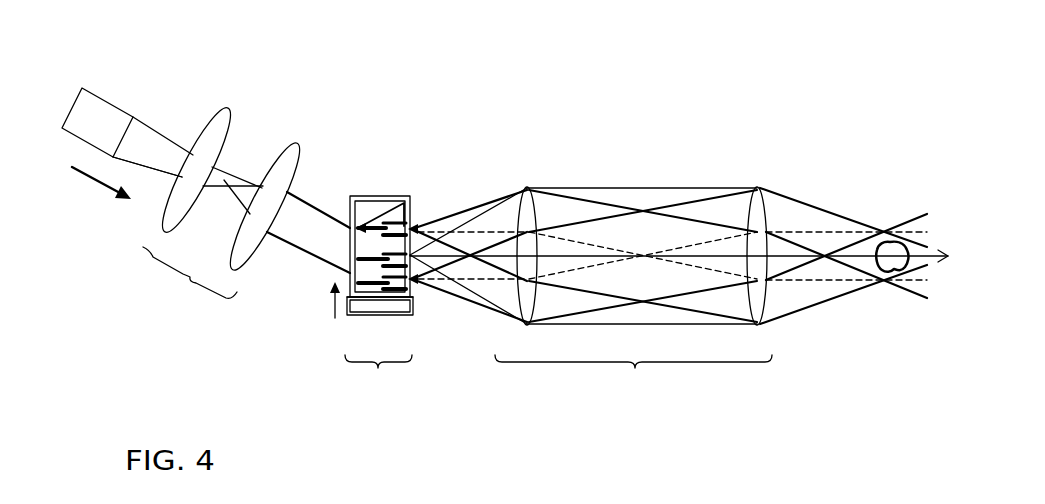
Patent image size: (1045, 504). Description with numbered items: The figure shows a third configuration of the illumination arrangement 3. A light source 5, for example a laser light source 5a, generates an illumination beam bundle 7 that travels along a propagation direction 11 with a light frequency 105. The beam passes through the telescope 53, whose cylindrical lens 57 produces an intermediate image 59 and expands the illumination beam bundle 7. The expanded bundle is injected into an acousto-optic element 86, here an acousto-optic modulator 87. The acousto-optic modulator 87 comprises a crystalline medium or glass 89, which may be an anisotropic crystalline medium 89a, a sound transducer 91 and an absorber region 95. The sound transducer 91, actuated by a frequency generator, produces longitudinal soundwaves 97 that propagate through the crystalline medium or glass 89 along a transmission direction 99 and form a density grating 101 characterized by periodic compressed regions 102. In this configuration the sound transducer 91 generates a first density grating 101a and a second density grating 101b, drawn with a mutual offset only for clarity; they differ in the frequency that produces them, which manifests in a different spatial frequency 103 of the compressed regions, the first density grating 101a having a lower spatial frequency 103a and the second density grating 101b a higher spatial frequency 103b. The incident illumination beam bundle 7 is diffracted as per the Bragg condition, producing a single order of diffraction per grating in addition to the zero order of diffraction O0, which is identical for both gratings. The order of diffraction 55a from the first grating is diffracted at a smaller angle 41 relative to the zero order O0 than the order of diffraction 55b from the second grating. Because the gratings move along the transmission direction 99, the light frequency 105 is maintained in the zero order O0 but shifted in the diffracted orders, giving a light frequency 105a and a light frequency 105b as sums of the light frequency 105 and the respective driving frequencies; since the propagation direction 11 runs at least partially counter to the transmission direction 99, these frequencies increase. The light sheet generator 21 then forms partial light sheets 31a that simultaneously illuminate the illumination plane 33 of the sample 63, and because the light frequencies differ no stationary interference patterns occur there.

The light source 5 is at (111, 100).
The laser light source 5a is at (112, 106).
The illumination beam bundle 7 is at (173, 148).
The propagation direction 11 is at (73, 172).
The light frequency 105 is at (160, 163).
The cylindrical lens 57 is at (228, 110).
The intermediate image 59 is at (237, 153).
The telescope 53 is at (190, 281).
The first density grating 101a is at (254, 280).
The spatial frequency of first density grating 103a is at (350, 248).
The acousto-optic element 86 is at (360, 217).
The acousto-optic modulator 87 is at (356, 197).
The compressed regions 102 is at (368, 295).
The crystalline medium or glass 89 is at (394, 195).
The anisotropic crystalline medium 89a is at (366, 245).
The absorber region 95 is at (380, 225).
The soundwaves 97 is at (420, 222).
The density grating 101 is at (415, 284).
The transmission direction 99 is at (335, 305).
The sound transducer 91 is at (350, 315).
The illumination arrangement 3 is at (378, 379).
The spatial frequency 103 is at (477, 373).
The second density grating 101b is at (475, 317).
The spatial frequency of second density grating 103b is at (475, 317).
The zero order of diffraction O0 is at (514, 278).
The angle 41 is at (520, 262).
The light sheet generator 21 is at (662, 228).
The order of diffraction of first density grating 55a is at (679, 206).
The light frequency of first order of diffraction 105a is at (603, 252).
The order of diffraction of second density grating 55b is at (659, 166).
The light frequency of second order of diffraction 105b is at (575, 212).
The partial light sheet 31a is at (850, 258).
The sample 63 is at (888, 243).
The illumination plane 33 is at (921, 283).